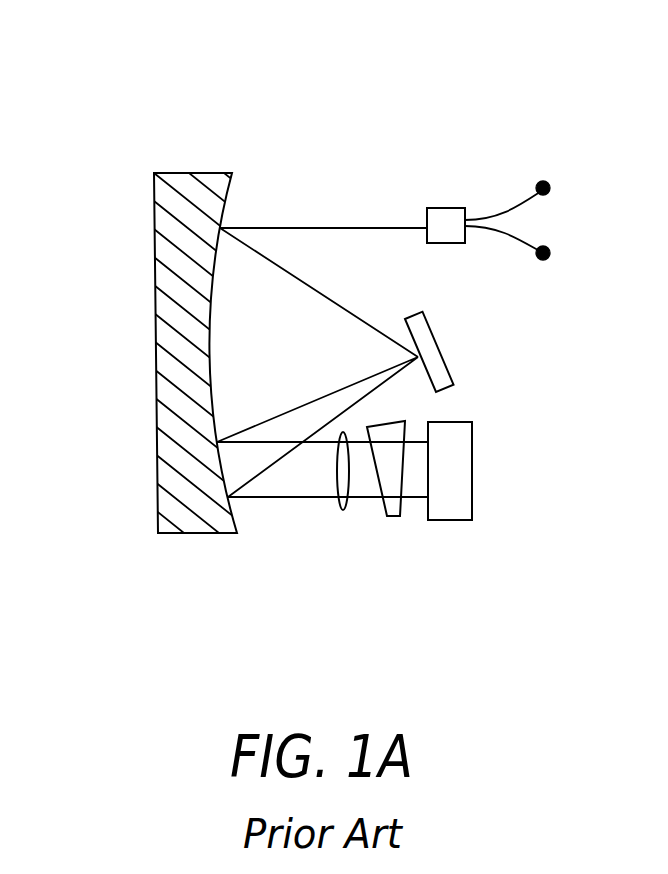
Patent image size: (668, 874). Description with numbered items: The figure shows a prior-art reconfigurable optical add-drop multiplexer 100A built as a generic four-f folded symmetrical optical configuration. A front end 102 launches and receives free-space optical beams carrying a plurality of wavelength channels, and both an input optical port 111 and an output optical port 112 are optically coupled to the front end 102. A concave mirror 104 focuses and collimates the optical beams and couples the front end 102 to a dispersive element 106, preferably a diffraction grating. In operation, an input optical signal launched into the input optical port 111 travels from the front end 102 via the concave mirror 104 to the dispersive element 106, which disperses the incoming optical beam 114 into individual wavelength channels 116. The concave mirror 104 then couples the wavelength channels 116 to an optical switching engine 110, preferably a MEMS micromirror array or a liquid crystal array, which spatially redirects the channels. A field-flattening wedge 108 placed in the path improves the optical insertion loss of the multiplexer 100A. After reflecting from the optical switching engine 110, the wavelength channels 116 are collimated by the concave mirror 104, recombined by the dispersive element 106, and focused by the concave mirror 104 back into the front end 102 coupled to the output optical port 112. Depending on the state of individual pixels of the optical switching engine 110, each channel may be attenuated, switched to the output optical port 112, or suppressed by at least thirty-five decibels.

The reconfigurable optical add-drop multiplexer 100A is at (343, 90).
The front end 102 is at (443, 208).
The concave mirror 104 is at (155, 332).
The dispersive element 106 is at (433, 326).
The field-flattening wedge 108 is at (394, 517).
The optical switching engine 110 is at (472, 466).
The input optical port 111 is at (543, 188).
The output optical port 112 is at (543, 253).
The incoming optical beam 114 is at (355, 313).
The wavelength channels 116 is at (343, 508).